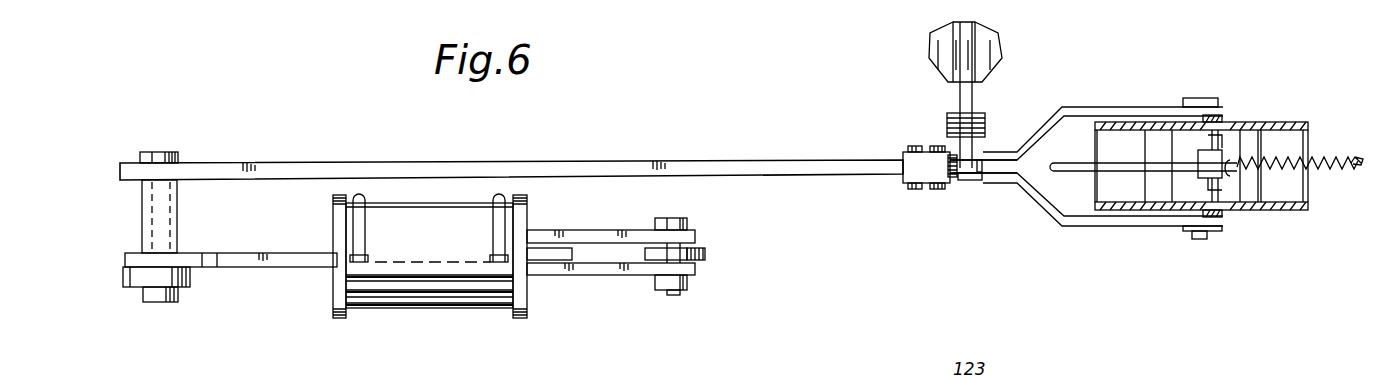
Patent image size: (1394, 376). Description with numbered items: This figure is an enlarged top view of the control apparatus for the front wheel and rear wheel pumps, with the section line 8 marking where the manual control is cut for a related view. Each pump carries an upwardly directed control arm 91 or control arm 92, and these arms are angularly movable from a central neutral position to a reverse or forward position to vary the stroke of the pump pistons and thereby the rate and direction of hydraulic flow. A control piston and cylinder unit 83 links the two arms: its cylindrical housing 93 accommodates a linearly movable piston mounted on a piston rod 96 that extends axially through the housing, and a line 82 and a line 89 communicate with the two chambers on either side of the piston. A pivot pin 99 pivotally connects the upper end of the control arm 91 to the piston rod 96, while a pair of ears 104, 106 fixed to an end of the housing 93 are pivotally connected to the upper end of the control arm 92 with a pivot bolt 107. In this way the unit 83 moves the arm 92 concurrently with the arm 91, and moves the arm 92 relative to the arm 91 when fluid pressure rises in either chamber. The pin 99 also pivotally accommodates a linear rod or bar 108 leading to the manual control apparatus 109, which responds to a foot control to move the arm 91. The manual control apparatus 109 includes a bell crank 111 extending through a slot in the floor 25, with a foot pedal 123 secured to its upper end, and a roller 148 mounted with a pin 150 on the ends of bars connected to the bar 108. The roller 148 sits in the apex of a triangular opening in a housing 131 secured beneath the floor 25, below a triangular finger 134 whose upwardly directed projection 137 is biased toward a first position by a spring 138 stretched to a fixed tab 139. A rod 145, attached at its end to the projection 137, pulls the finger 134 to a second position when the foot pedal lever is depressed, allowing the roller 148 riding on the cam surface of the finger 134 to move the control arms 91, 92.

The section line 8- 8 is at (928, 227).
The floor 25 is at (1003, 52).
The line 82 is at (363, 221).
The control piston and cylinder unit 83 is at (417, 317).
The line 89 is at (497, 220).
The control arm 91 is at (144, 278).
The control arm 92 is at (683, 258).
The cylindrical housing 93 is at (470, 295).
The piston rod 96 is at (263, 270).
The pivot pin 99 is at (160, 305).
The ear 104 is at (690, 234).
The ear 106 is at (611, 272).
The pivot bolt 107 is at (673, 296).
The rod or bar 108 is at (211, 167).
The manual control apparatus 109 is at (880, 108).
The bell crank 111 is at (972, 106).
The foot pedal 123 is at (947, 118).
The housing 131 is at (1297, 123).
The finger 134 is at (1172, 147).
The projection 137 is at (1222, 150).
The spring 138 is at (1318, 170).
The fixed tab 139 is at (1359, 152).
The rod 145 is at (1062, 163).
The roller 148 is at (1192, 213).
The pin 150 is at (1200, 231).